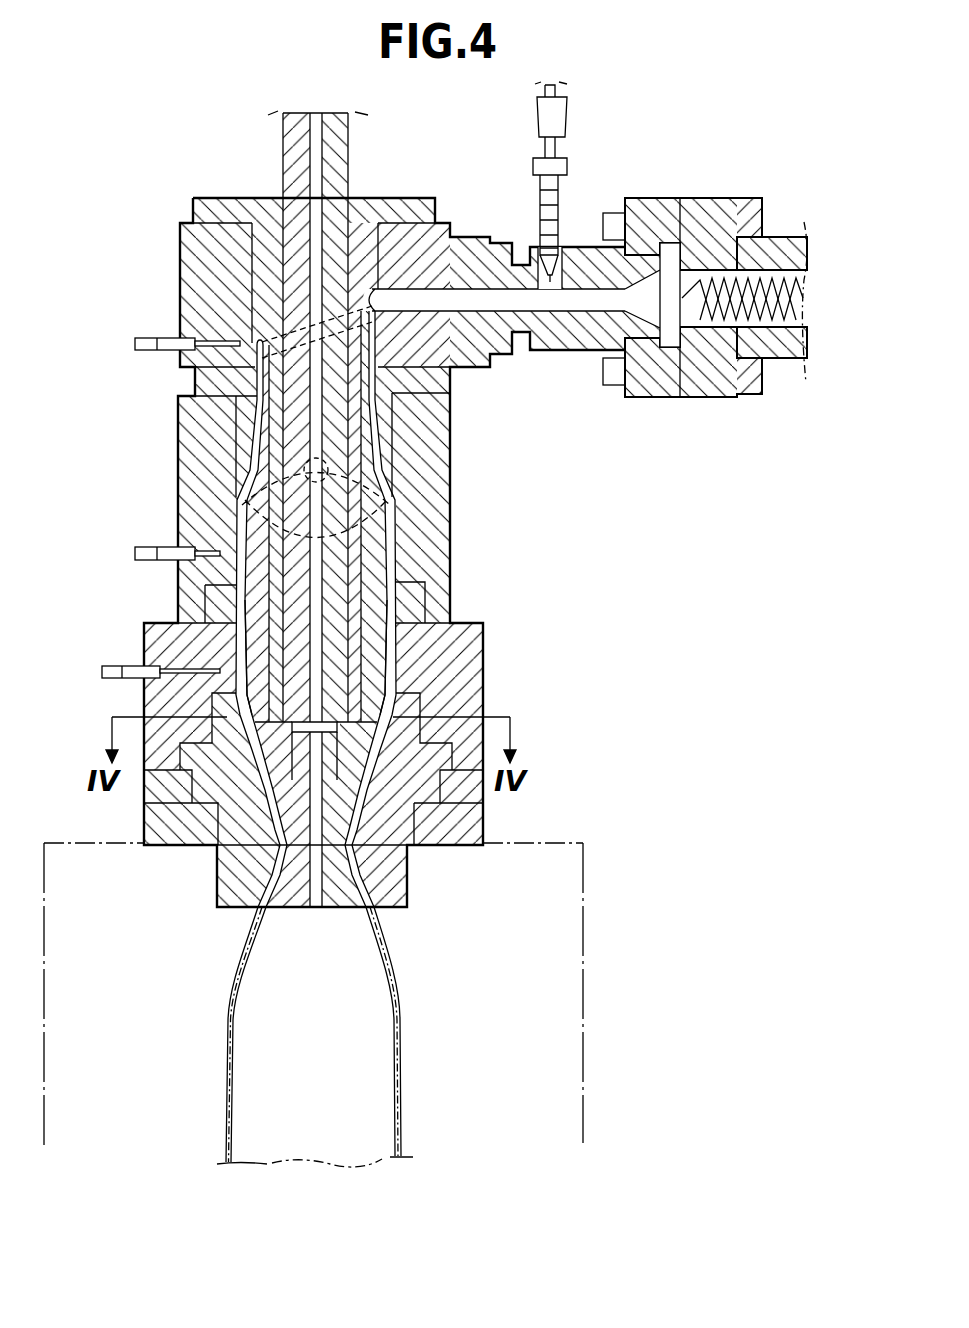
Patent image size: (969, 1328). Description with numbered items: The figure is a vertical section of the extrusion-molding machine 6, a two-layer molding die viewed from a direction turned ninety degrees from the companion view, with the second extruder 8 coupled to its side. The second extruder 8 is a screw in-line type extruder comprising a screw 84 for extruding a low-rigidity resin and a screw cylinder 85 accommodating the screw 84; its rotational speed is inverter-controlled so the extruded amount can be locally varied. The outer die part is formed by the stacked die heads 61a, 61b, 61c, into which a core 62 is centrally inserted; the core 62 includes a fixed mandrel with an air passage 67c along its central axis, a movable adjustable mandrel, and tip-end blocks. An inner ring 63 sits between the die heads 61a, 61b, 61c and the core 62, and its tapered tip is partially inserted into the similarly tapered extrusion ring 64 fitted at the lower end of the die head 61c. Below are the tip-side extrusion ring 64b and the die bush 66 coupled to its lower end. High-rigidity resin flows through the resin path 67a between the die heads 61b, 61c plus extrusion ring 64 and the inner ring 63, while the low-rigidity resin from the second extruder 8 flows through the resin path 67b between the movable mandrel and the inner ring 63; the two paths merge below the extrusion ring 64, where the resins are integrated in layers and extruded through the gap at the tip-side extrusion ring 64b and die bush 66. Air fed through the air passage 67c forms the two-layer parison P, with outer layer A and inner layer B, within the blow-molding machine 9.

The extrusion-molding machine 6 is at (209, 165).
The die head 61a is at (435, 240).
The die head 61b is at (435, 448).
The die head 61c is at (458, 636).
The core 62 is at (360, 548).
The inner ring 63 is at (372, 608).
The extrusion ring 64 is at (401, 706).
The tip-side extrusion ring 64b is at (470, 785).
The die bush 66 is at (383, 877).
The resin path 67a is at (240, 670).
The resin path 67b is at (262, 614).
The air passage 67c is at (305, 428).
The second extruder 8 is at (786, 234).
The screw 84 is at (787, 297).
The screw cylinder 85 is at (783, 360).
The blow-molding machine 9 is at (583, 947).
The parison P is at (398, 1009).
The outer layer A is at (227, 1025).
The inner layer B is at (229, 1073).